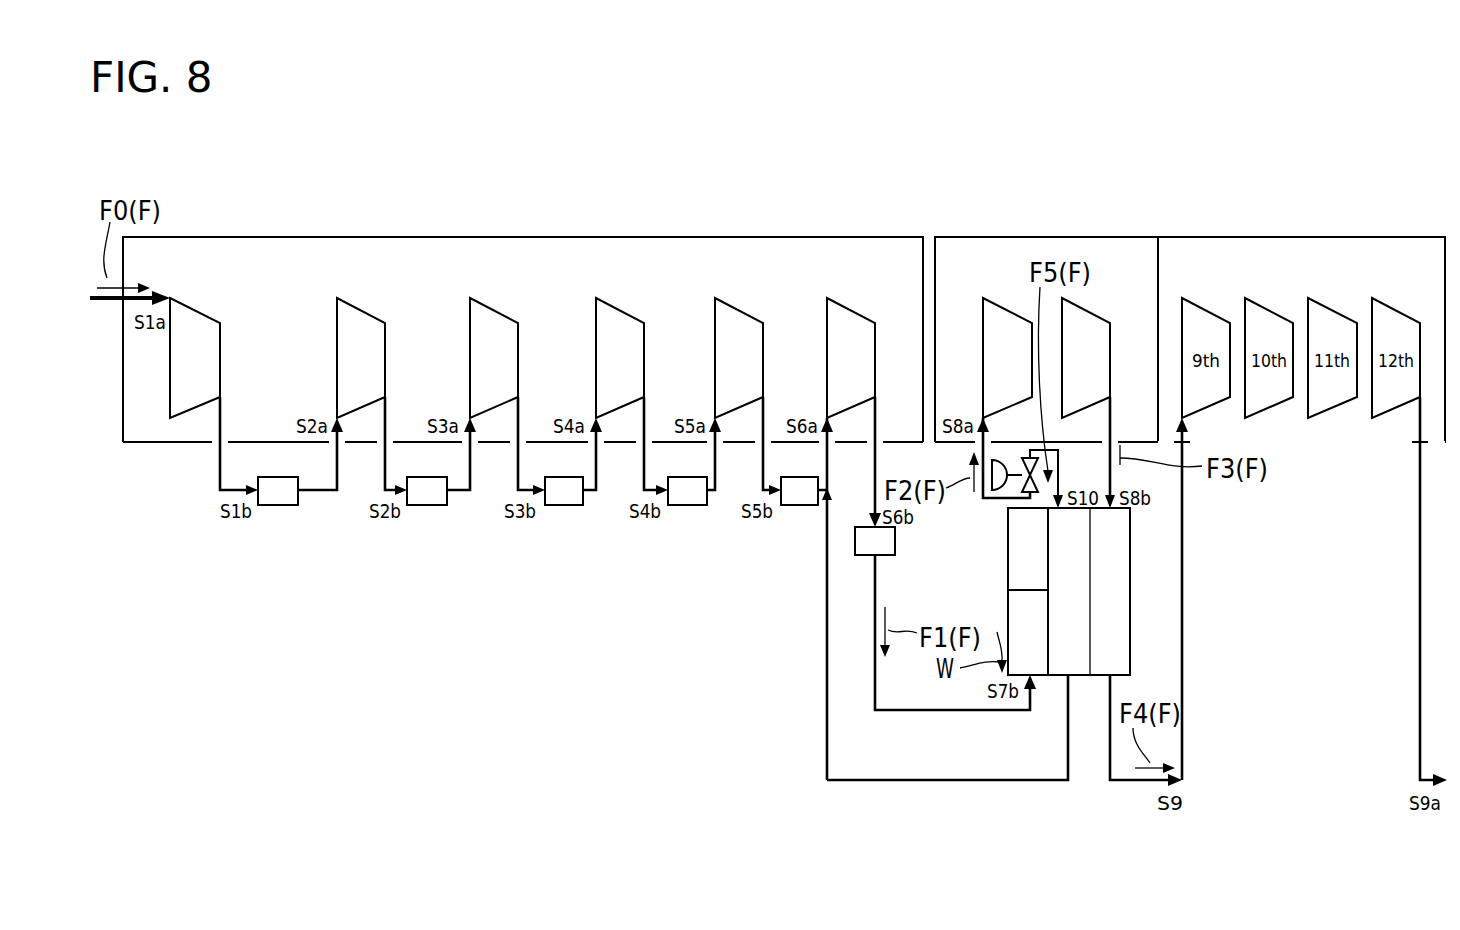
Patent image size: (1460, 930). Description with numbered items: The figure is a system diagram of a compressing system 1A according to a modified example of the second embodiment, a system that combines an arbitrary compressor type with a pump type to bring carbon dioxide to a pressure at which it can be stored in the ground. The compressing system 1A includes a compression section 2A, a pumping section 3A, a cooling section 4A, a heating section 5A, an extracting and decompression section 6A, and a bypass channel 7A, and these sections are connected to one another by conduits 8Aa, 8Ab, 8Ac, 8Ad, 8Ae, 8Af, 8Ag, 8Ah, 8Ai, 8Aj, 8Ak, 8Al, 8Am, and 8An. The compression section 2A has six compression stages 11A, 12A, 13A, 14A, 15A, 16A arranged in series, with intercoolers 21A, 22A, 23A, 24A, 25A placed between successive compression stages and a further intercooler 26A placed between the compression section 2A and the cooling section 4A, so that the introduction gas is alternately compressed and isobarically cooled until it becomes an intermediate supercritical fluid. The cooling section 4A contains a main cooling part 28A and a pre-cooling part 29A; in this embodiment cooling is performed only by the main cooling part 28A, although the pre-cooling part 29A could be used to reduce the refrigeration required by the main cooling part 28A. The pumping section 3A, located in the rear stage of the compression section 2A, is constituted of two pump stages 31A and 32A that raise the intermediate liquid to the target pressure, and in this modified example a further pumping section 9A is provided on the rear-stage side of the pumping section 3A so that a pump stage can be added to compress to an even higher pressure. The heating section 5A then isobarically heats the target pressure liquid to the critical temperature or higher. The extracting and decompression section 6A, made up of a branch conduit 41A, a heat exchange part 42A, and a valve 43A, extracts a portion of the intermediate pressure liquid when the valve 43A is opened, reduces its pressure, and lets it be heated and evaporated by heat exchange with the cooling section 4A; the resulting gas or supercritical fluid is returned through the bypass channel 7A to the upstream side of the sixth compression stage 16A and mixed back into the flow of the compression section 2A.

The compressing system 1A is at (1165, 140).
The compression section 2A is at (557, 237).
The pumping section 3A is at (1047, 237).
The pumping section 9A is at (1300, 237).
The compression stage 11A is at (197, 318).
The compression stage 12A is at (360, 318).
The compression stage 13A is at (494, 318).
The compression stage 14A is at (621, 318).
The compression stage 15A is at (741, 318).
The compression stage 16A is at (853, 318).
The pump stage 31A is at (1009, 318).
The pump stage 32A is at (1099, 320).
The intercooler 21A is at (278, 505).
The intercooler 22A is at (427, 505).
The intercooler 23A is at (565, 505).
The intercooler 24A is at (688, 505).
The intercooler 25A is at (800, 505).
The intercooler 26A is at (866, 556).
The cooling section 4A is at (920, 548).
The main cooling part 28A is at (1008, 550).
The pre-cooling part 29A is at (1010, 612).
The heating section 5A is at (1125, 590).
The extracting and decompression section 6A is at (1005, 843).
The branch conduit 41A is at (1047, 500).
The heat exchange part 42A is at (1082, 668).
The valve 43A is at (1040, 496).
The bypass channel 7A is at (950, 781).
The conduit 8Aa is at (222, 418).
The conduit 8Ab is at (339, 463).
The conduit 8Ac is at (387, 418).
The conduit 8Ad is at (472, 463).
The conduit 8Ae is at (520, 418).
The conduit 8Af is at (598, 463).
The conduit 8Ag is at (647, 418).
The conduit 8Ah is at (717, 463).
The conduit 8Ai is at (766, 418).
The conduit 8Aj is at (829, 464).
The conduit 8Ak is at (877, 418).
The conduit 8Al is at (915, 711).
The conduit 8Am is at (1008, 499).
The conduit 8An is at (1112, 418).